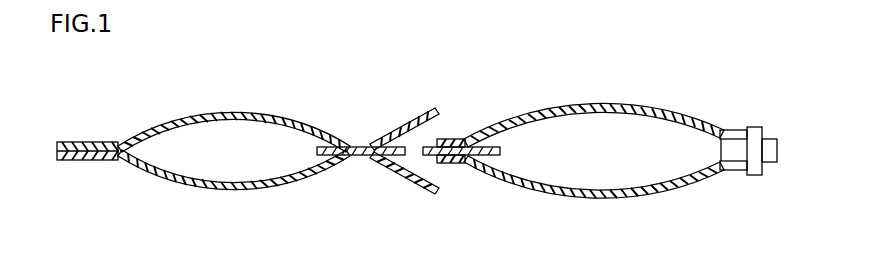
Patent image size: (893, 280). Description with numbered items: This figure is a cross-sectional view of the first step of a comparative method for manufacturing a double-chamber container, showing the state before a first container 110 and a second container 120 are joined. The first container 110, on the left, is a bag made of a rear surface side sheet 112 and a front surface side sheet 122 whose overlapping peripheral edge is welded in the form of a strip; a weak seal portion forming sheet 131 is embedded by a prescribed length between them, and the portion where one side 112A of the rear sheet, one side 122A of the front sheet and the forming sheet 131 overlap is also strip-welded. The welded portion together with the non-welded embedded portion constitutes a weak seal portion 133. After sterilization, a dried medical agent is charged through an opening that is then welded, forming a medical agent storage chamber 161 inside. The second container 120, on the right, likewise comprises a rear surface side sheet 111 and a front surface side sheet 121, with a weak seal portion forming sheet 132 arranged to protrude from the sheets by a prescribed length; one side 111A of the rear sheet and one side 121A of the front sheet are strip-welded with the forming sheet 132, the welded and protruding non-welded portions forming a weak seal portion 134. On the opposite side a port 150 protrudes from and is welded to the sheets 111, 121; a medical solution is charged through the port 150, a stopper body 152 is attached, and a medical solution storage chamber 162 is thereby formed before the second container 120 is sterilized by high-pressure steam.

The first container 110 is at (203, 141).
The rear surface side sheet 112 is at (238, 112).
The front surface side sheet 122 is at (228, 186).
The medical agent storage chamber 161 is at (200, 143).
The weak seal portion 133 is at (378, 146).
The weak seal portion forming sheet 131 is at (357, 160).
The one side of rear surface side sheet 112A is at (406, 131).
The one side of front surface side sheet 122A is at (407, 178).
The weak seal portion 134 is at (462, 150).
The weak seal portion forming sheet 132 is at (462, 156).
The one side of rear surface side sheet 111A is at (453, 140).
The one side of front surface side sheet 121A is at (447, 160).
The second container 120 is at (605, 141).
The rear surface side sheet 111 is at (617, 106).
The front surface side sheet 121 is at (607, 193).
The medical solution storage chamber 162 is at (568, 137).
The port 150 is at (762, 150).
The stopper body 152 is at (772, 147).